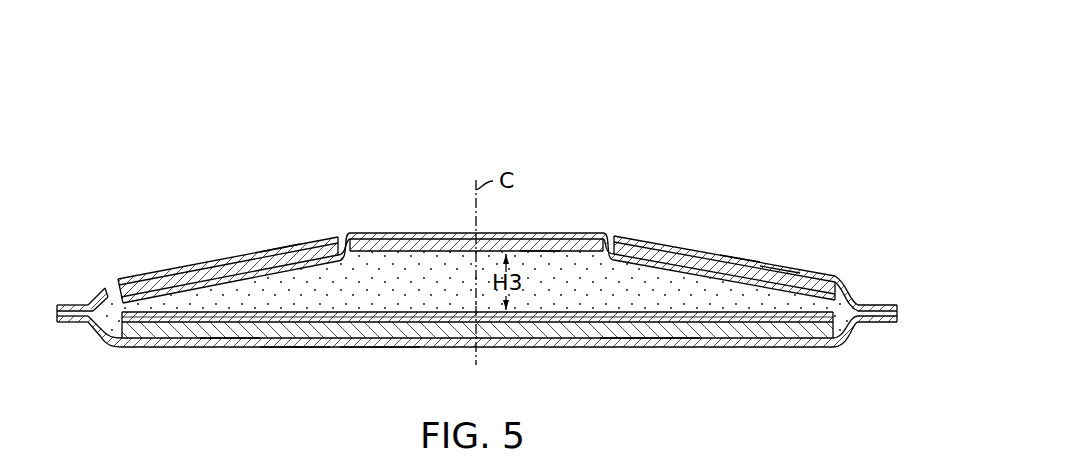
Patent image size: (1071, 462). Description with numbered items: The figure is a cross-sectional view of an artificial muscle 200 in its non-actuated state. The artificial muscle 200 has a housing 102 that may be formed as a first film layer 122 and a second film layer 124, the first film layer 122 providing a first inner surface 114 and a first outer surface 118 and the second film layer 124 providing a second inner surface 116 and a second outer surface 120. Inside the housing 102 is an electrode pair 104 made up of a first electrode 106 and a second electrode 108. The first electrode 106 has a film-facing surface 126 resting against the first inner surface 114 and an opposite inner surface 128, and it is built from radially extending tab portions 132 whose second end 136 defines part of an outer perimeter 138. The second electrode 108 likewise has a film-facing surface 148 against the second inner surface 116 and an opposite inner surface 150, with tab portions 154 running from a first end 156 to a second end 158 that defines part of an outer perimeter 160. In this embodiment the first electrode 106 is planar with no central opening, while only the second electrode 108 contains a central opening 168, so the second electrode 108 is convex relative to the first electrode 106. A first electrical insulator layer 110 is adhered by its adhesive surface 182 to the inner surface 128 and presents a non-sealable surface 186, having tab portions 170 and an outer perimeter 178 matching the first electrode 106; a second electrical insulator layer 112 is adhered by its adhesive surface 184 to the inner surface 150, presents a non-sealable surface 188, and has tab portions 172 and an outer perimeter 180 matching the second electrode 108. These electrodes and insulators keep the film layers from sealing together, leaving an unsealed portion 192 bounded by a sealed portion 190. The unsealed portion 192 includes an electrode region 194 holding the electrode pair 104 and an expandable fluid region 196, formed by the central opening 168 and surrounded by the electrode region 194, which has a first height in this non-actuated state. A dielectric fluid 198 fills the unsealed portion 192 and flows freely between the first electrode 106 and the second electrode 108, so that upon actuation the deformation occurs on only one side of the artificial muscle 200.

The housing 102 is at (86, 213).
The electrode pair 104 is at (749, 371).
The first electrode 106 is at (691, 356).
The second electrode 108 is at (782, 222).
The first electrical insulator layer 110 is at (452, 304).
The second electrical insulator layer 112 is at (456, 257).
The first inner surface 114 is at (105, 332).
The second inner surface 116 is at (100, 297).
The first outer surface 118 is at (64, 323).
The second outer surface 120 is at (58, 303).
The first film layer 122 is at (378, 351).
The second film layer 124 is at (386, 220).
The film-facing surface 126 is at (283, 337).
The inner surface 128 is at (236, 330).
The tab portions 132 is at (306, 351).
The second end 136 is at (153, 331).
The outer perimeter 138 is at (117, 345).
The film-facing surface 148 is at (218, 267).
The inner surface 150 is at (230, 262).
The tab portions 154 is at (279, 230).
The first end 156 is at (336, 241).
The second end 158 is at (128, 284).
The outer perimeter 160 is at (118, 282).
The central opening 168 is at (437, 238).
The tab portions 170 is at (792, 346).
The tab portions 172 is at (804, 291).
The outer perimeter 178 is at (850, 321).
The outer perimeter 180 is at (839, 303).
The adhesive surface 182 is at (634, 330).
The adhesive surface 184 is at (657, 253).
The non-sealable surface 186 is at (596, 318).
The non-sealable surface 188 is at (588, 250).
The sealed portion 190 is at (906, 312).
The unsealed portion 192 is at (798, 262).
The electrode region 194 is at (735, 245).
The expandable fluid region 196 is at (537, 247).
The dielectric fluid 198 is at (522, 318).
The artificial muscle 200 is at (773, 108).